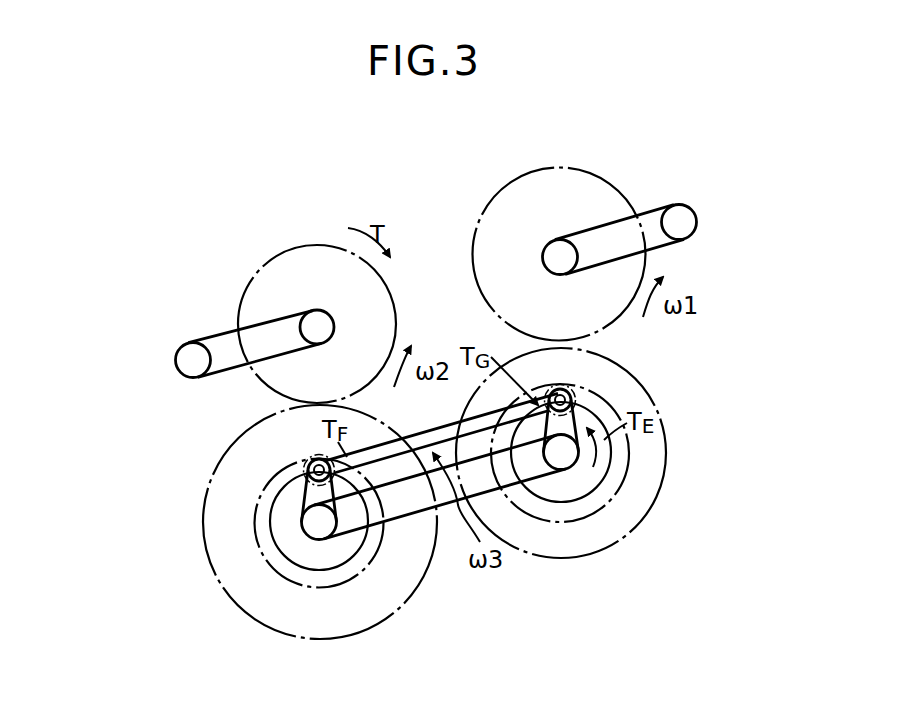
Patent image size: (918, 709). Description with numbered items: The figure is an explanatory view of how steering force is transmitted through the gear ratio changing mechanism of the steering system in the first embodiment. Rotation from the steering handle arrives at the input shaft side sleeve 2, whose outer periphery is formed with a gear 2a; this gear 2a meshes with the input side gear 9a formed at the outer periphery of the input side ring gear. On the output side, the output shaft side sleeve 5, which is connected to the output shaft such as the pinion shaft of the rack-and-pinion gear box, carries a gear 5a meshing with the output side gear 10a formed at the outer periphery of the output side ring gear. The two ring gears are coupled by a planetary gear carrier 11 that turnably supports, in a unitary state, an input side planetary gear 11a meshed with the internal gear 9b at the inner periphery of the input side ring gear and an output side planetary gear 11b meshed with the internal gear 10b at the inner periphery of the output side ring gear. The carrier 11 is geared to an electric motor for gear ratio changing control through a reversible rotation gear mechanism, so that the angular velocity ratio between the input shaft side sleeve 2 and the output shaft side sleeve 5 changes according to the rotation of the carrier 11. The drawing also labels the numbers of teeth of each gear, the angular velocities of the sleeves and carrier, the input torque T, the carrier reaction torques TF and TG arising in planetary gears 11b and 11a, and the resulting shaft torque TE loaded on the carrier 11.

The input shaft side sleeve 2 is at (653, 207).
The gear 2a is at (595, 172).
The output shaft side sleeve 5 is at (211, 338).
The gear 5a is at (268, 266).
The input side gear 9a is at (665, 430).
The internal gear 9b is at (622, 492).
The output side gear 10a is at (210, 480).
The internal gear 10b is at (263, 560).
The planetary gear carrier 11 is at (443, 492).
The input side planetary gear 11a is at (578, 393).
The output side planetary gear 11b is at (297, 457).